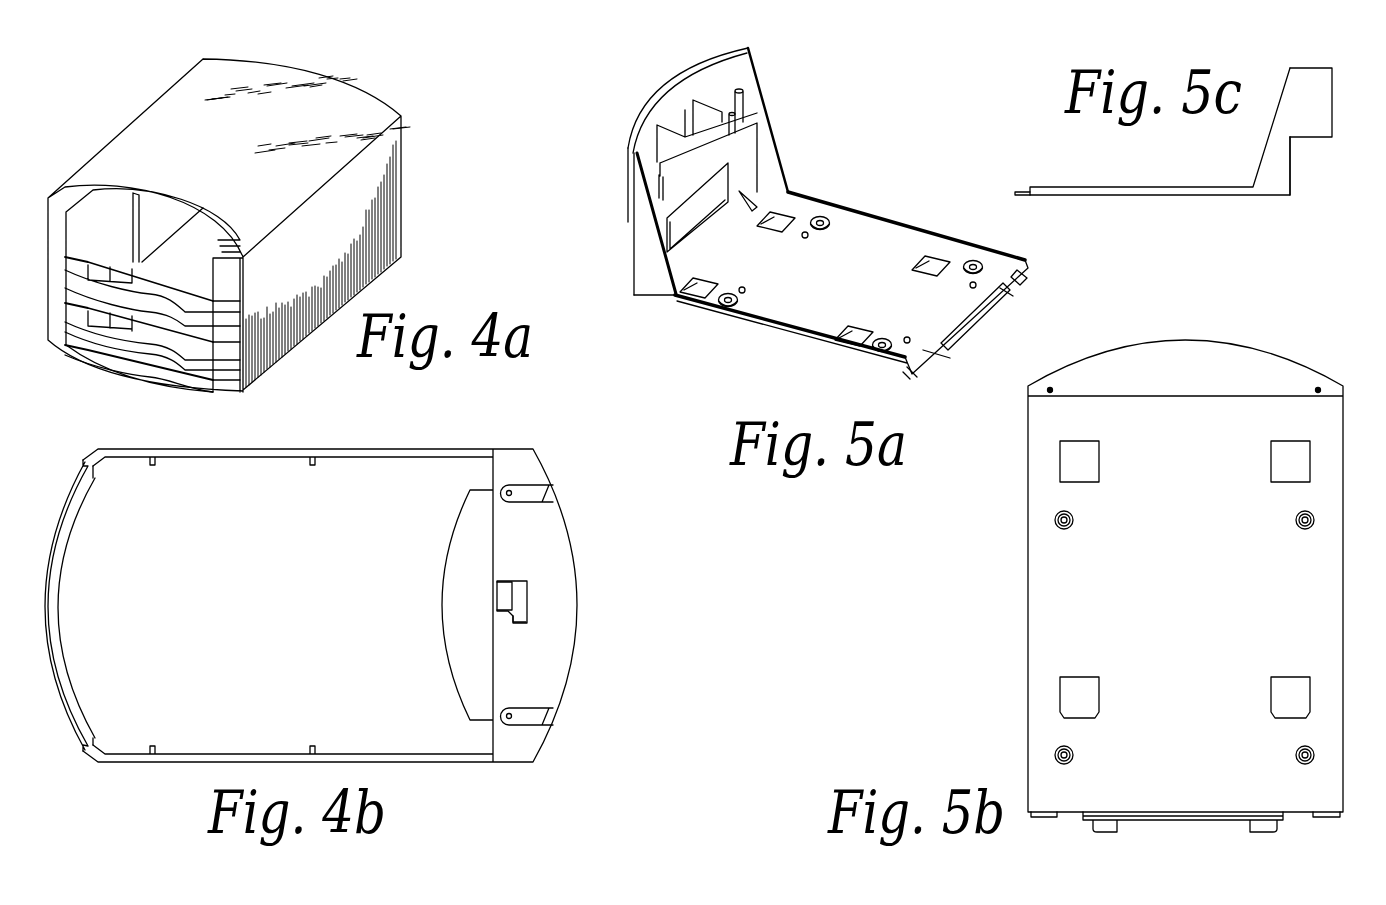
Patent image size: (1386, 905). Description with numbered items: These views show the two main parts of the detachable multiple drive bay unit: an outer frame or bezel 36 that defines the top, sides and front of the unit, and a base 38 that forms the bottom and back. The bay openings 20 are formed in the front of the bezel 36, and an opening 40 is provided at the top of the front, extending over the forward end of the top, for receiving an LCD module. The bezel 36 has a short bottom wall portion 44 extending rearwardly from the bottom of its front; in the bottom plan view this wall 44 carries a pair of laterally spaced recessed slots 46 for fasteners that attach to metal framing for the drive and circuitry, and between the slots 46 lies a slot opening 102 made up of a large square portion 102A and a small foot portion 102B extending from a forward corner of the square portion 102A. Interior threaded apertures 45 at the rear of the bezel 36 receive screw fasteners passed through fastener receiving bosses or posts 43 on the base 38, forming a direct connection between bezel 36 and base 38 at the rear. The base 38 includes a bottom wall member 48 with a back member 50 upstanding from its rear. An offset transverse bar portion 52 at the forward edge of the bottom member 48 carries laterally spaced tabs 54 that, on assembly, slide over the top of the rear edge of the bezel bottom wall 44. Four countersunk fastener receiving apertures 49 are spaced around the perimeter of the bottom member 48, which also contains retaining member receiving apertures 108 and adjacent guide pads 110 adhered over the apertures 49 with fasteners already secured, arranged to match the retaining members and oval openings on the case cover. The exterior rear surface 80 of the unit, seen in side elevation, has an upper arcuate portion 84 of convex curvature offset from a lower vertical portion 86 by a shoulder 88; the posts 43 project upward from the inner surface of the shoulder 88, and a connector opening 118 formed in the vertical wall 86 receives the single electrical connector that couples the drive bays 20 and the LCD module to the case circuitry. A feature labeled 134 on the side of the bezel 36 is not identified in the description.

In FIG. 4a, the bay openings 20 is at (230, 366).
In FIG. 4a, the bezel 36 is at (359, 51).
In FIG. 5a, the base 38 is at (866, 108).
In FIG. 4a, the opening 40 is at (76, 231).
In FIG. 5a, the fastener receiving posts 43 is at (747, 103).
In FIG. 4b, the bottom wall portion 44 is at (552, 565).
In FIG. 4b, the interior threaded apertures 45 is at (82, 472).
In FIG. 4b, the recessed slots 46 is at (533, 492).
In FIG. 5a, the bottom wall member 48 is at (867, 251).
In FIG. 5b, the bottom wall member 48 is at (1070, 600).
In FIG. 5b, the countersunk fastener receiving apertures 49 is at (1055, 520).
In FIG. 5a, the back member 50 is at (730, 73).
In FIG. 5a, the offset transverse bar portion 52 is at (982, 320).
In FIG. 5c, the tabs 54 is at (1016, 188).
In FIG. 5b, the tabs 54 is at (1260, 826).
In FIG. 5a, the rear surface 80 is at (689, 218).
In FIG. 5c, the rear surface 80 is at (1186, 143).
In FIG. 5a, the upper arcuate portion 84 is at (643, 100).
In FIG. 5c, the upper arcuate portion 84 is at (1333, 95).
In FIG. 5a, the lower vertical portion 86 is at (636, 269).
In FIG. 5a, the shoulder 88 is at (625, 228).
In FIG. 5c, the shoulder 88 is at (1312, 140).
In FIG. 4b, the slot opening 102 is at (538, 597).
In FIG. 4b, the large square portion 102A is at (498, 596).
In FIG. 4b, the small foot portion 102B is at (530, 619).
In FIG. 5a, the retaining member receiving apertures 108 is at (782, 217).
In FIG. 5b, the guide pads 110 is at (1303, 512).
In FIG. 5a, the connector opening 118 is at (712, 211).
In FIG. 4a, the side face 134 is at (365, 212).